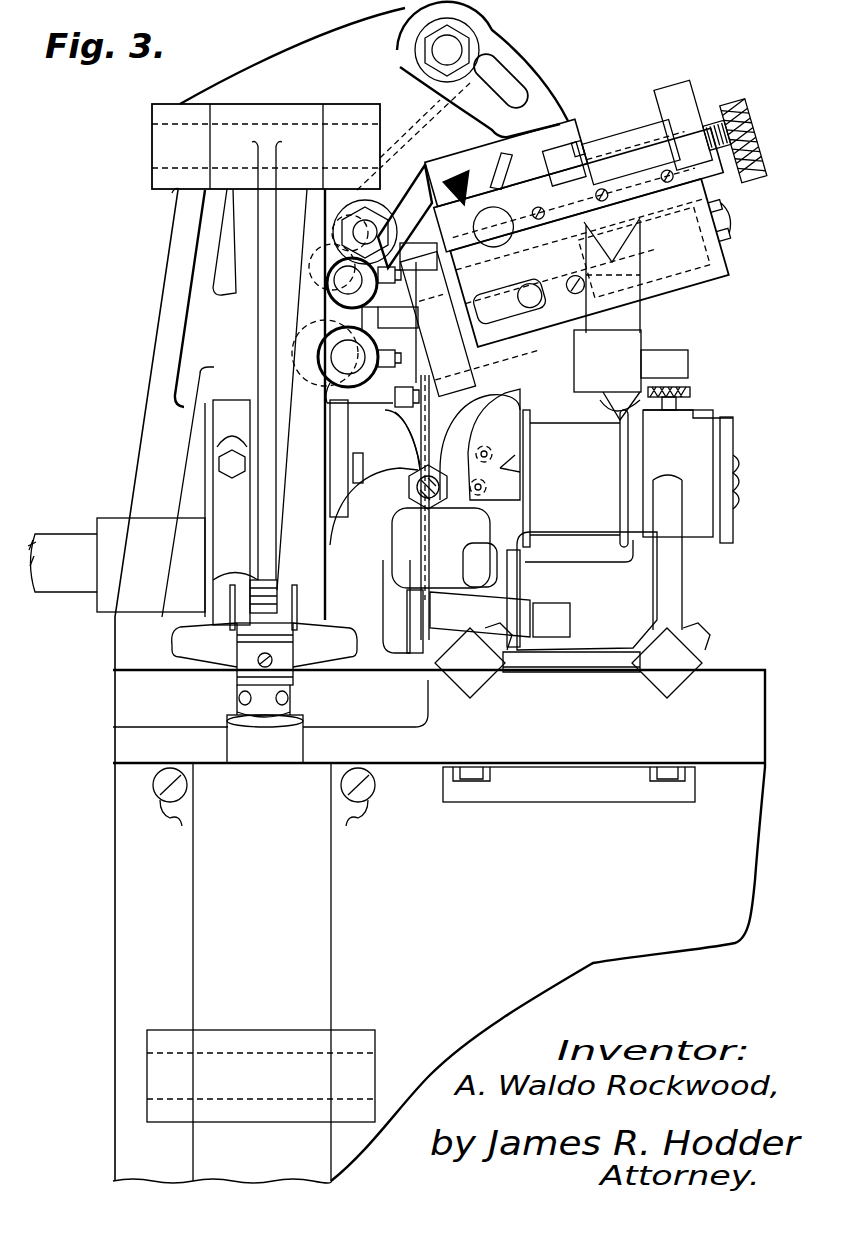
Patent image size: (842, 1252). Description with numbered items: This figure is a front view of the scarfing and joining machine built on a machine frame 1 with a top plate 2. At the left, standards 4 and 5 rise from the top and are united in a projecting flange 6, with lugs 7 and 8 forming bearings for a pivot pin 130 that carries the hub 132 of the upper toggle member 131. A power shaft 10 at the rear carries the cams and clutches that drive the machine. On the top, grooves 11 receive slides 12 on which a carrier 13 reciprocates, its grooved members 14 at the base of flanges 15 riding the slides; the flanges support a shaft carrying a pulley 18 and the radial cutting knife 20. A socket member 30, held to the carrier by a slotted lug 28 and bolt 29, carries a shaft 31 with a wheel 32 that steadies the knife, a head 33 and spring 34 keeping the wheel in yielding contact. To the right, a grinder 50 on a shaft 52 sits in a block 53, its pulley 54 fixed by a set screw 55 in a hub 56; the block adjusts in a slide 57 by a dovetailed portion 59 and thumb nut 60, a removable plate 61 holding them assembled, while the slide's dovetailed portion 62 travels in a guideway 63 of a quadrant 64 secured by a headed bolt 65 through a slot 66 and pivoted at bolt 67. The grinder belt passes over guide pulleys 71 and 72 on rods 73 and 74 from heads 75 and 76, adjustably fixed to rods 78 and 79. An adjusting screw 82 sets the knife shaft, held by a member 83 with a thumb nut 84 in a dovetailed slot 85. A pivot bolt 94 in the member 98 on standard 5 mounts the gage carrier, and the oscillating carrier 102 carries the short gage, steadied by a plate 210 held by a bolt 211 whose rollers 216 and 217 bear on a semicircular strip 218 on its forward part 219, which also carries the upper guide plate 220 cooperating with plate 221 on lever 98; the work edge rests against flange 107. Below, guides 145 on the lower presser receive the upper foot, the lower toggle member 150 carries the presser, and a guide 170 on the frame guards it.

The machine frame 1 is at (710, 940).
The top plate 2 is at (755, 690).
The standard 4 is at (146, 452).
The standard 5 is at (318, 500).
The projecting flange 6 is at (312, 54).
The lug 7 is at (152, 110).
The lug 8 is at (355, 108).
The power shaft 10 is at (48, 576).
The groove 11 is at (480, 680).
The slide 12 is at (688, 703).
The carrier 13 is at (587, 591).
The grooved member 14 is at (500, 652).
The flange 15 is at (505, 572).
The pulley 18 is at (575, 478).
The radial cutting knife 20 is at (512, 408).
The slotted lug 28 is at (521, 592).
The bolt 29 is at (560, 563).
The socket member 30 is at (507, 652).
The shaft 31 is at (430, 609).
The wheel 32 is at (412, 605).
The head 33 is at (560, 628).
The spring 34 is at (560, 615).
The grinder 50 is at (437, 323).
The shaft 52 is at (462, 322).
The block 53 is at (697, 257).
The pulley 54 is at (620, 290).
The set screw 55 is at (567, 305).
The hub 56 is at (565, 247).
The slide 57 is at (618, 150).
The dovetailed portion 59 is at (707, 174).
The thumb nut 60 is at (755, 140).
The removable plate 61 is at (636, 188).
The dovetailed portion 62 is at (483, 178).
The guideway 63 is at (540, 121).
The quadrant 64 is at (532, 62).
The headed bolt 65 is at (447, 50).
The slot 66 is at (500, 60).
The pivot bolt 67 is at (363, 221).
The guide pulley 71 is at (600, 220).
The guide pulley 72 is at (641, 340).
The rod 73 is at (657, 270).
The rod 74 is at (688, 368).
The head 75 is at (406, 252).
The head 76 is at (388, 344).
The rod 78 is at (345, 290).
The rod 79 is at (335, 361).
The adjusting screw 82 is at (735, 472).
The member 83 is at (720, 418).
The thumb nut 84 is at (690, 392).
The dovetailed slot 85 is at (673, 418).
The pivot bolt 94 is at (412, 488).
The member 98 is at (373, 660).
The oscillating carrier 102 is at (486, 398).
The flange 107 is at (490, 512).
The pivot pin 130 is at (160, 156).
The toggle member 131 is at (265, 252).
The hub 132 is at (296, 112).
The guide 145 is at (237, 638).
The lower toggle member 150 is at (233, 745).
The guide 170 is at (193, 895).
The plate 210 is at (512, 462).
The bolt 211 is at (520, 472).
The roller 216 is at (498, 448).
The roller 217 is at (478, 515).
The semicircular strip 218 is at (485, 485).
The forward part 219 is at (448, 425).
The plate 220 is at (408, 406).
The plate 221 is at (402, 420).